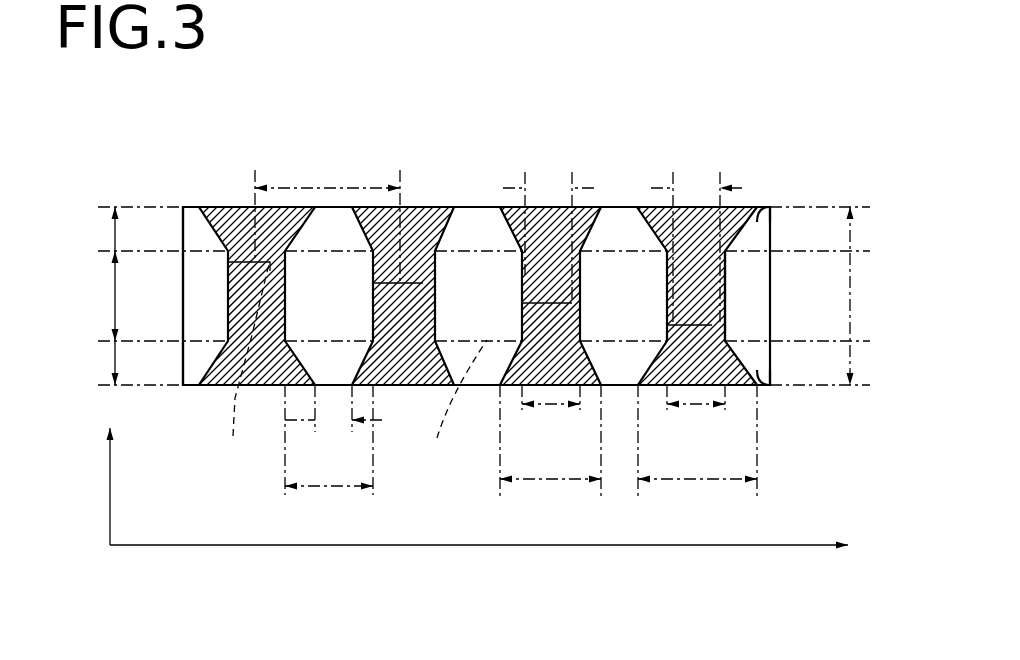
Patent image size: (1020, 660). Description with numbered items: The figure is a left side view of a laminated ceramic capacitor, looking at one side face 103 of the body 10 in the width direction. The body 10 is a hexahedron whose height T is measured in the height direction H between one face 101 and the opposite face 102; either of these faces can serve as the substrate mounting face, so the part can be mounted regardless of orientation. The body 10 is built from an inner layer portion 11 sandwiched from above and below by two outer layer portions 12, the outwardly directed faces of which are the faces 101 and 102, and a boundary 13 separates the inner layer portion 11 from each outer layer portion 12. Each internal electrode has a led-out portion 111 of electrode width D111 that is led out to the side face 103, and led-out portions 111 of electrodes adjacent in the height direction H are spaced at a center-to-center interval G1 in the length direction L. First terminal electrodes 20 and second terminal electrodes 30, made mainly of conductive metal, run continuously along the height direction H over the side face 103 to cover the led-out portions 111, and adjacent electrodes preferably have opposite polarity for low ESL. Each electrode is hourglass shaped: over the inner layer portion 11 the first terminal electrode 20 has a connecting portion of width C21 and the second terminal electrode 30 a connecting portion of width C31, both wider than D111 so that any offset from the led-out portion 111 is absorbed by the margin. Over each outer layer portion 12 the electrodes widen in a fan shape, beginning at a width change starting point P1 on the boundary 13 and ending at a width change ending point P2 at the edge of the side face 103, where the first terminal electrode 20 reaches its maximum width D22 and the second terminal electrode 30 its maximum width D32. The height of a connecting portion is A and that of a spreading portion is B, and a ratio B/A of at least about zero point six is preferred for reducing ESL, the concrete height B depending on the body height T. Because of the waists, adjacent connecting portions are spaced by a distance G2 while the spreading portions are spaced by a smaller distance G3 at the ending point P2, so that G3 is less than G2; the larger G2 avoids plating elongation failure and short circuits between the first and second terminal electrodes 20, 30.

The body 10 is at (180, 203).
The inner layer portion 11 is at (183, 296).
The outer layer portion 12 is at (183, 237).
The boundary 13 is at (454, 402).
The first terminal electrode 20 is at (424, 201).
The second terminal electrode 30 is at (230, 202).
The face 101 is at (765, 206).
The face 102 is at (770, 387).
The side face 103 is at (478, 206).
The led-out portion 111 is at (237, 363).
The interval G1 is at (325, 188).
The distance G2 is at (328, 488).
The distance G3 is at (330, 422).
The electrode width D111 is at (550, 186).
The maximum electrode width D22 is at (543, 481).
The maximum electrode width D32 is at (690, 481).
The electrode width C21 is at (545, 406).
The electrode width C31 is at (690, 406).
The height T is at (850, 292).
The height A is at (113, 298).
The height B is at (113, 226).
The height direction H is at (108, 488).
The length direction L is at (488, 548).
The width change starting point P1 is at (726, 250).
The width change ending point P2 is at (768, 212).